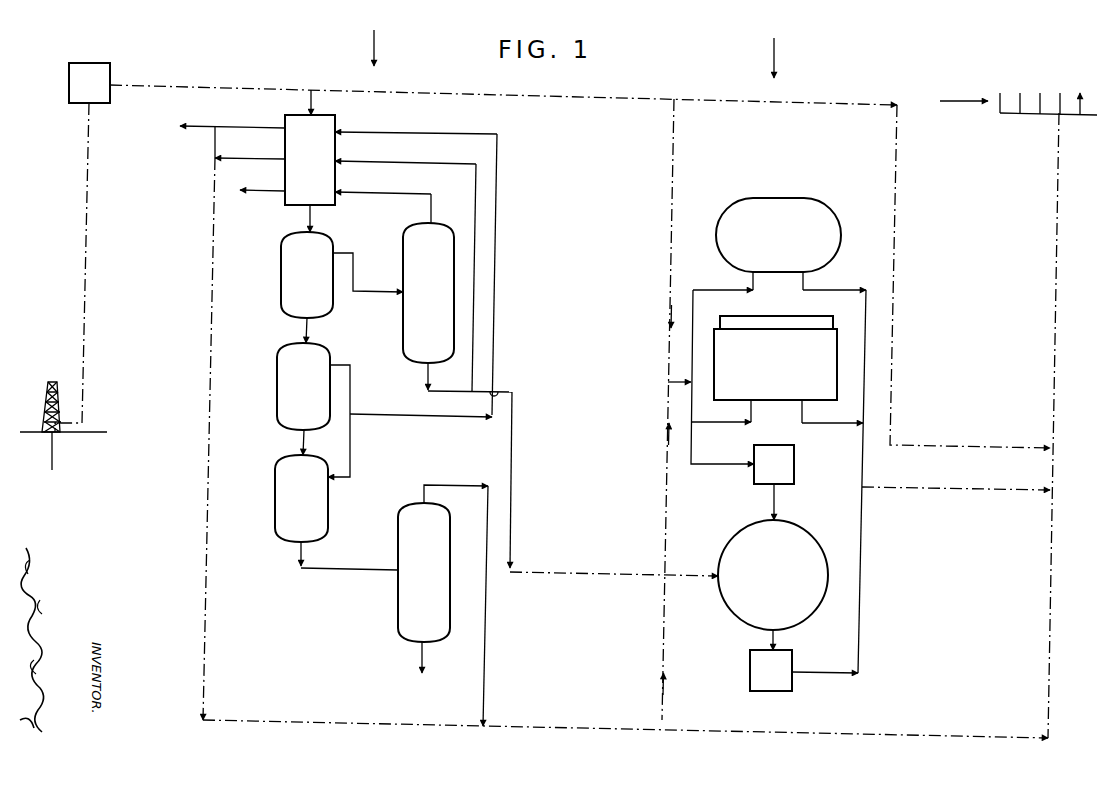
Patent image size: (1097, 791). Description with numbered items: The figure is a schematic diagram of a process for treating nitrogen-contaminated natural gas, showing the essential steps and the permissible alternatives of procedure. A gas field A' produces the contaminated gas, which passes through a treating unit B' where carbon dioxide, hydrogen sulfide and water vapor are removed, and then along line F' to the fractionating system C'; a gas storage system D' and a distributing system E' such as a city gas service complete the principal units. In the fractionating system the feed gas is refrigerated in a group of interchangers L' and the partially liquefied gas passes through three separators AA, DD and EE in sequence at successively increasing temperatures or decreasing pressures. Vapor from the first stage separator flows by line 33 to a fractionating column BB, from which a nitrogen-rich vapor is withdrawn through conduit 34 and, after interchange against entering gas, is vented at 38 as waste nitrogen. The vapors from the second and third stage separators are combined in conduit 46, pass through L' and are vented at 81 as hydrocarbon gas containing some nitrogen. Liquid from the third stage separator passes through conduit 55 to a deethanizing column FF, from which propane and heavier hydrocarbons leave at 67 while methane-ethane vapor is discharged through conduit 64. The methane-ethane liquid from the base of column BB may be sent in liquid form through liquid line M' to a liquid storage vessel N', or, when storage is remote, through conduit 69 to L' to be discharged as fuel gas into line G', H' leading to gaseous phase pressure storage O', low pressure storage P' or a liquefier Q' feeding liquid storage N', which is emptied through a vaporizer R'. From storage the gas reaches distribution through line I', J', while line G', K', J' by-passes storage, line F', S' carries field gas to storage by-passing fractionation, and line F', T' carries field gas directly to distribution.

The gas field A' is at (60, 426).
The treating unit B' is at (89, 83).
The fractionating system C' is at (373, 37).
The gas storage system D' is at (774, 48).
The distributing system E' is at (1006, 103).
The gas line F' is at (476, 249).
The gas line G' is at (613, 448).
The gas line H' is at (649, 559).
The gas line I' is at (956, 480).
The gas line J' is at (1040, 425).
The gas line K' is at (849, 722).
The interchangers L' is at (310, 147).
The liquid line M' is at (614, 485).
The liquid storage vessel N' is at (773, 585).
The gaseous phase pressure storage O' is at (779, 244).
The low pressure gaseous phase storage P' is at (777, 369).
The liquefier Q' is at (742, 405).
The vaporizer R' is at (808, 490).
The gas line S' is at (663, 409).
The gas line T' is at (928, 267).
The first stage separator AA is at (307, 261).
The fractionating column BB is at (457, 307).
The second stage separator DD is at (313, 397).
The third stage separator EE is at (301, 486).
The deethanizing column FF is at (424, 572).
The line 33 is at (384, 290).
The conduit 34 is at (396, 192).
The vent 38 is at (271, 190).
The conduit 46 is at (421, 132).
The conduit 55 is at (356, 567).
The conduit 64 is at (460, 485).
The outlet 67 is at (425, 652).
The conduit 69 is at (424, 162).
The vent 81 is at (254, 128).